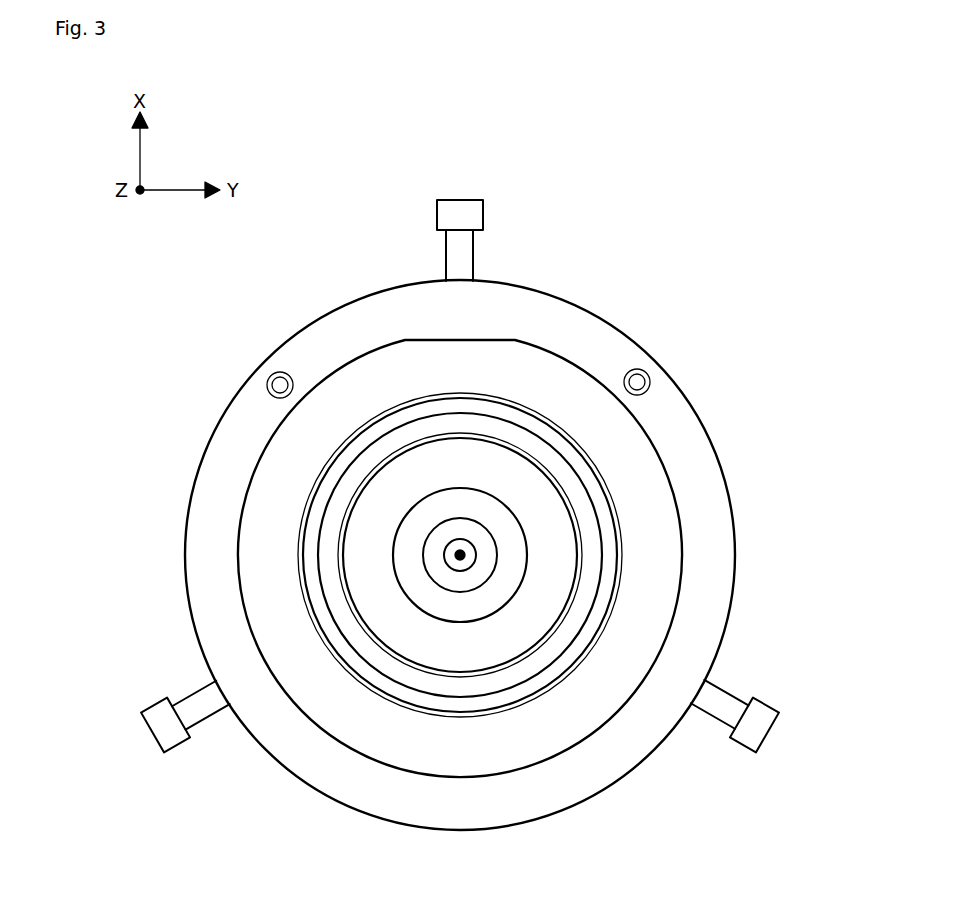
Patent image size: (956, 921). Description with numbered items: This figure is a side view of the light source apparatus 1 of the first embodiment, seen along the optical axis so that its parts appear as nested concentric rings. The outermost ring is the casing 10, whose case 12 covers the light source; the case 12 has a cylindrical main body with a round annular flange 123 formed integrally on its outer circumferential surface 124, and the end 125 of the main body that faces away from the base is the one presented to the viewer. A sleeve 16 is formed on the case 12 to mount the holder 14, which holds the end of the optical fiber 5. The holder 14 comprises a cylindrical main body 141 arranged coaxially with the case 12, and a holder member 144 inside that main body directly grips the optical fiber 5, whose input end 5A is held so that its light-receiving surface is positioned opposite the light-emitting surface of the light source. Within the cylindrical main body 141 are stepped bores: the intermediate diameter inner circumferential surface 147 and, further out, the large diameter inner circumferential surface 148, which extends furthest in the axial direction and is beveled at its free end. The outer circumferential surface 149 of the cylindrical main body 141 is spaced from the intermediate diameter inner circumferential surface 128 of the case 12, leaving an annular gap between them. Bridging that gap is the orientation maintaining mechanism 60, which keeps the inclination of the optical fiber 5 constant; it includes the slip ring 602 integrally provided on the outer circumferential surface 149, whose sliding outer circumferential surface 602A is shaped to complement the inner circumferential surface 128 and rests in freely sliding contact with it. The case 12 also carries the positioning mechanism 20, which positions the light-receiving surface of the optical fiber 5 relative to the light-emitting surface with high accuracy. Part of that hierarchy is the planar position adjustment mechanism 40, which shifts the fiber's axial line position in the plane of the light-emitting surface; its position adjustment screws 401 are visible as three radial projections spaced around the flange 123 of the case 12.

The light source apparatus 1 is at (460, 480).
The casing 10 is at (483, 552).
The case 12 is at (482, 555).
The annular flange 123 is at (728, 627).
The outer circumferential surface 124 is at (518, 558).
The end 125 is at (662, 522).
The sleeve 16 is at (518, 543).
The holder 14 is at (399, 503).
The cylindrical main body 141 is at (459, 493).
The holder member 144 is at (492, 553).
The intermediate diameter inner circumferential surface 147 is at (402, 588).
The large diameter inner circumferential surface 148 is at (342, 580).
The outer circumferential surface 149 is at (366, 555).
The intermediate diameter inner circumferential surface 128 is at (308, 535).
The orientation maintaining mechanism 60 is at (379, 555).
The slip ring 602 is at (379, 555).
The sliding outer circumferential surface 602A is at (305, 500).
The optical fiber 5 is at (467, 560).
The input end 5A is at (455, 570).
The positioning mechanism 20 is at (460, 443).
The planar position adjustment mechanism 40 is at (460, 443).
The position adjustment screw 401 is at (438, 213).